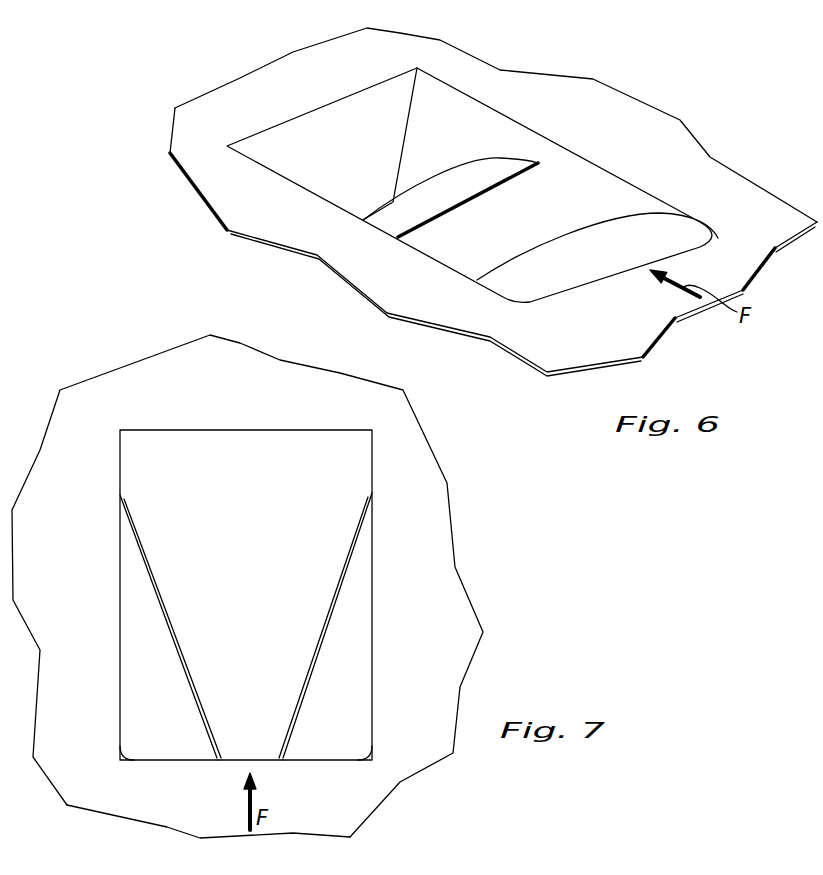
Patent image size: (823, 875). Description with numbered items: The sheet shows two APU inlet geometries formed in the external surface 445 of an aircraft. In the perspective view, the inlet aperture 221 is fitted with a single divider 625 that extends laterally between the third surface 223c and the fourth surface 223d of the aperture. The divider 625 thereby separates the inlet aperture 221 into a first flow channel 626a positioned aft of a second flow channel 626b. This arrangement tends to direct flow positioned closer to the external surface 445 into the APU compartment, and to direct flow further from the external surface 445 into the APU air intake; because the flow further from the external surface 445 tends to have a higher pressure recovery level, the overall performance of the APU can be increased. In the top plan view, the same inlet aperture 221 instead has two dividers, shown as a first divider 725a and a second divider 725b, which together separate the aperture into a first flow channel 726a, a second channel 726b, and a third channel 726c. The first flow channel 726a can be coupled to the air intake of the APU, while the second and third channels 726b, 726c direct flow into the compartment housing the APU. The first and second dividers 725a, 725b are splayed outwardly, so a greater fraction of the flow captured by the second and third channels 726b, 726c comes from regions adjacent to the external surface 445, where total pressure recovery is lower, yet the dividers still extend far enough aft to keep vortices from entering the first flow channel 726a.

In FIG. 6, the inlet aperture 221 is at (624, 283).
In FIG. 7, the inlet aperture 221 is at (341, 774).
In FIG. 6, the external surface 445 is at (720, 268).
In FIG. 7, the external surface 445 is at (197, 808).
In FIG. 6, the third surface 223c is at (597, 190).
In FIG. 6, the fourth surface 223d is at (450, 263).
In FIG. 6, the divider 625 is at (502, 170).
In FIG. 6, the first flow channel 626a is at (355, 186).
In FIG. 6, the second flow channel 626b is at (489, 259).
In FIG. 7, the first divider 725a is at (307, 680).
In FIG. 7, the second divider 725b is at (148, 583).
In FIG. 7, the first flow channel 726a is at (243, 500).
In FIG. 7, the second channel 726b is at (155, 708).
In FIG. 7, the third channel 726c is at (350, 647).